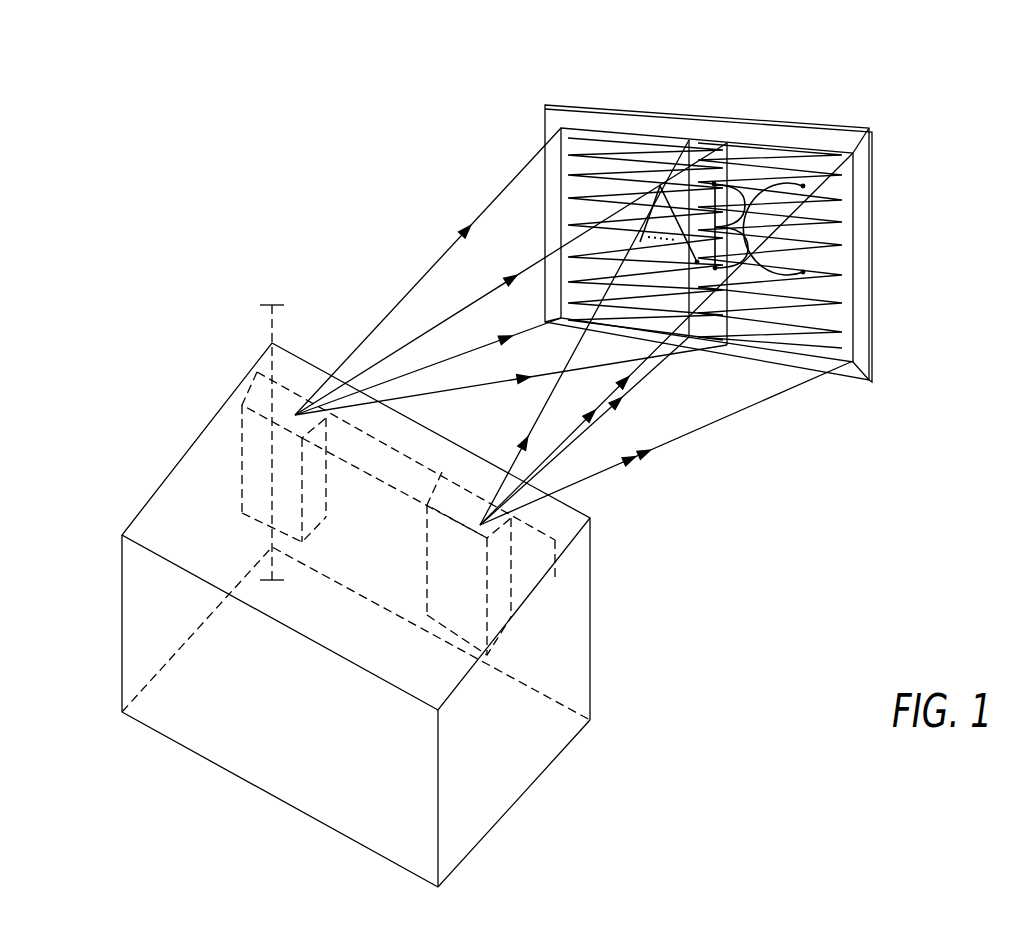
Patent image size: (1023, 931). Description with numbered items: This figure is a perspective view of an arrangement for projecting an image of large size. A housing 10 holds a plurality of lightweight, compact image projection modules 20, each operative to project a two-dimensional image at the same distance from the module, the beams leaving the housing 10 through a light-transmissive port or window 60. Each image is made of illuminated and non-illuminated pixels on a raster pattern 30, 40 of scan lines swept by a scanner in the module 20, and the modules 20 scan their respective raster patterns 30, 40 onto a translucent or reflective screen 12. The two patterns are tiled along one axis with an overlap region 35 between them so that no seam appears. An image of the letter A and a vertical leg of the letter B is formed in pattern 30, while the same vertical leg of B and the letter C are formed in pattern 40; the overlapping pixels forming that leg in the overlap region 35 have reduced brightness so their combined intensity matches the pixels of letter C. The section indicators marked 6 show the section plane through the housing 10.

The housing 10 is at (594, 598).
The screen 12 is at (868, 147).
The image projection module 20 is at (240, 450).
The raster pattern 30 is at (622, 138).
The overlap region 35 is at (707, 150).
The raster pattern 40 is at (778, 152).
The light-transmissive port or window 60 is at (430, 455).
The section line 6- 6 is at (268, 308).